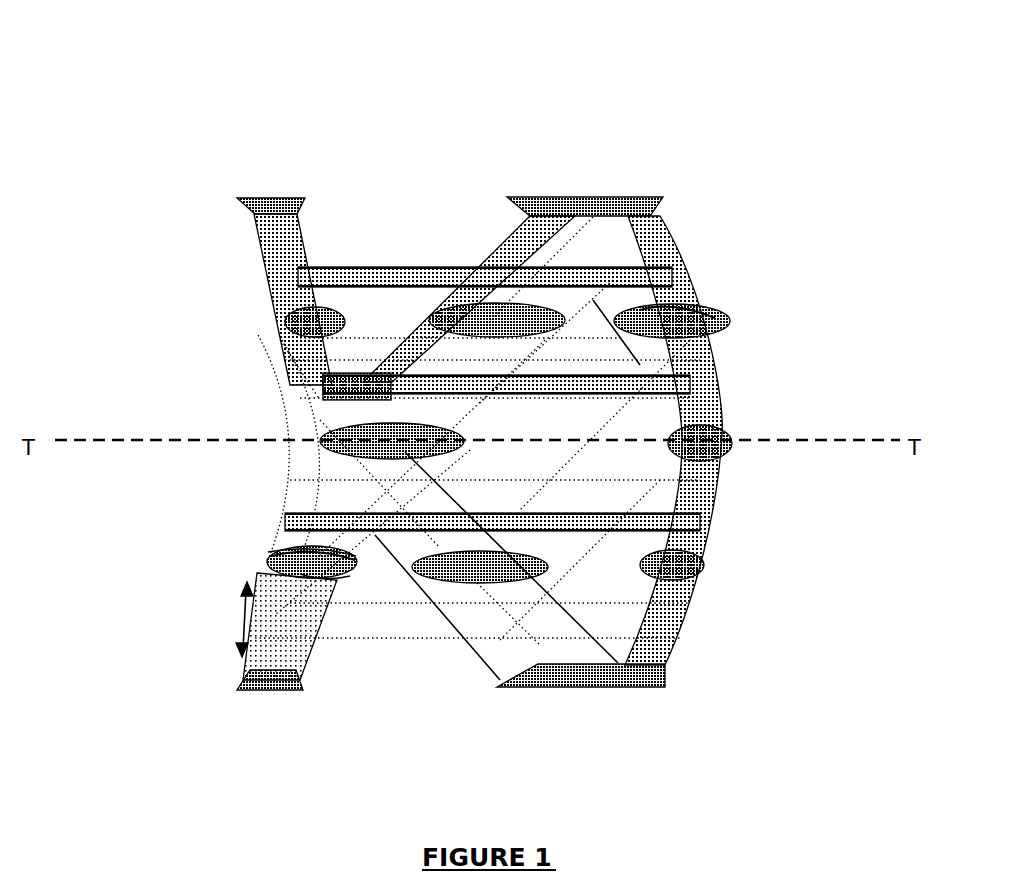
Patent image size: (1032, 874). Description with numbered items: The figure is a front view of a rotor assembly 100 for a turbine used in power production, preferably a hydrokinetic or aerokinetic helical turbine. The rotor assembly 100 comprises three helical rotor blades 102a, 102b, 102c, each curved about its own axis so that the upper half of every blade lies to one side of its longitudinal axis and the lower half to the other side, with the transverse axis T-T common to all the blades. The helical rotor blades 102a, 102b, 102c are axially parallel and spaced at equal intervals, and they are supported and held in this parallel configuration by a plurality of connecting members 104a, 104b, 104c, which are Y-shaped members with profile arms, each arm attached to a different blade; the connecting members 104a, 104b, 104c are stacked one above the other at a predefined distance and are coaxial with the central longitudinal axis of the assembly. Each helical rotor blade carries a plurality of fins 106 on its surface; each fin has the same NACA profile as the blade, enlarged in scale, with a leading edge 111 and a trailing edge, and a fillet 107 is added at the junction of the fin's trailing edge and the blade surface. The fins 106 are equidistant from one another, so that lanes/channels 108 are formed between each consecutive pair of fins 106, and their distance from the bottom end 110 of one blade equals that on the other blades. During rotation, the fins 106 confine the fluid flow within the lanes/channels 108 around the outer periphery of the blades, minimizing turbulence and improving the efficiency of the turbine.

The rotor assembly 100 is at (208, 28).
The helical rotor blade 102a is at (291, 240).
The helical rotor blade 102b is at (680, 273).
The helical rotor blade 102c is at (577, 247).
The connecting member 104a is at (380, 273).
The connecting member 104b is at (607, 382).
The connecting member 104c is at (605, 522).
The fins 106 is at (473, 567).
The fillet 107 is at (680, 303).
The lanes/channels 108 is at (247, 617).
The bottom end 110 is at (290, 560).
The leading edge 111 is at (334, 574).